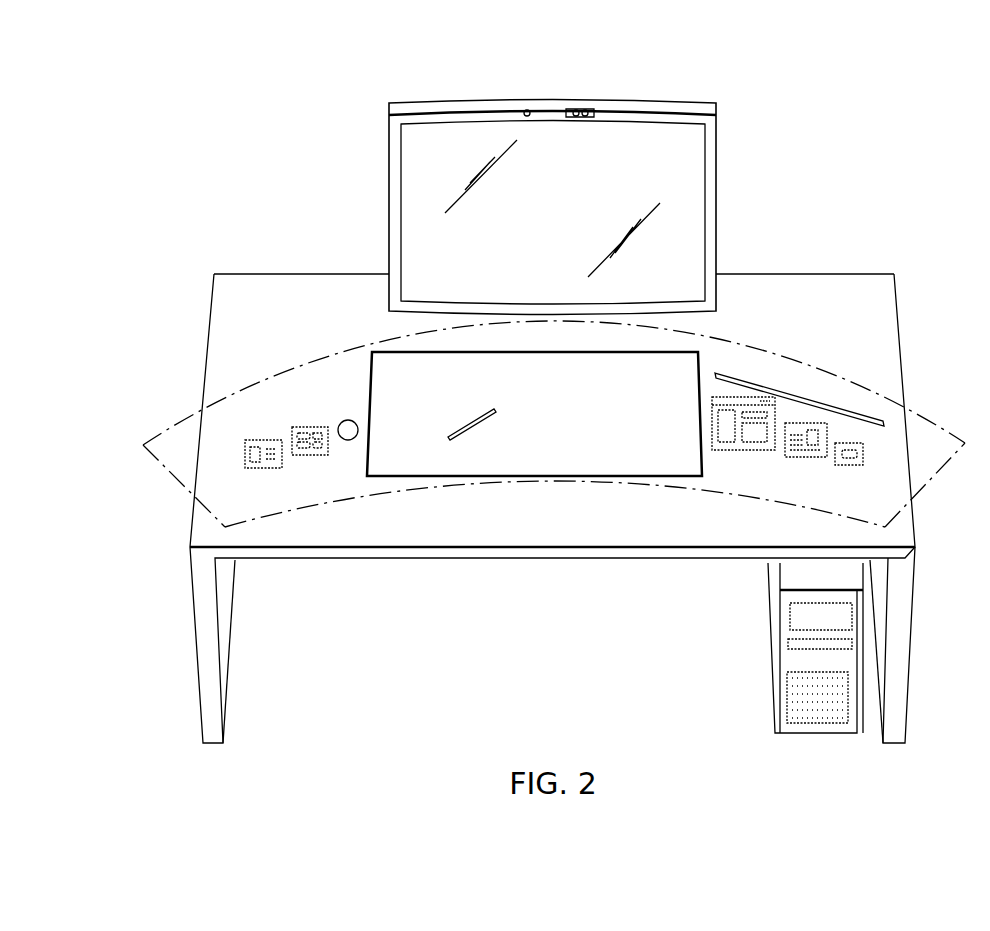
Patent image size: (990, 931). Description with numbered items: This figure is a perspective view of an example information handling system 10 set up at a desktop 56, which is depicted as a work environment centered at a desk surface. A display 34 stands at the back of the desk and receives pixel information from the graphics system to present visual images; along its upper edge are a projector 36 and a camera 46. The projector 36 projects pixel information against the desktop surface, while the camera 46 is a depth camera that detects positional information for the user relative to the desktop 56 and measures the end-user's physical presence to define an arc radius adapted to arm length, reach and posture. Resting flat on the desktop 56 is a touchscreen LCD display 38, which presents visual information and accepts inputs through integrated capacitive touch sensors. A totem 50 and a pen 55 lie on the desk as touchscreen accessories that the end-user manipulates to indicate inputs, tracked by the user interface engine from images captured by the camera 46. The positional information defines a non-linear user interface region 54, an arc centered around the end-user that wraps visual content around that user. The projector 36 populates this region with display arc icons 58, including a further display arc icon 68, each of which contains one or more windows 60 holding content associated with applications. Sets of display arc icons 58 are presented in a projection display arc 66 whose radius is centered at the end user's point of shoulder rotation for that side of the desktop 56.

The information handling system 10 is at (818, 712).
The display 34 is at (566, 241).
The projector 36 is at (527, 110).
The touchscreen LCD display 38 is at (386, 360).
The camera 46 is at (582, 110).
The totem 50 is at (340, 423).
The non-linear user interface region 54 is at (248, 409).
The pen 55 is at (474, 424).
The desktop 56 is at (885, 368).
The display arc icon 58 is at (303, 455).
The window 60 is at (750, 437).
The projection display arc 66 is at (555, 508).
The display arc icon 68 is at (798, 395).